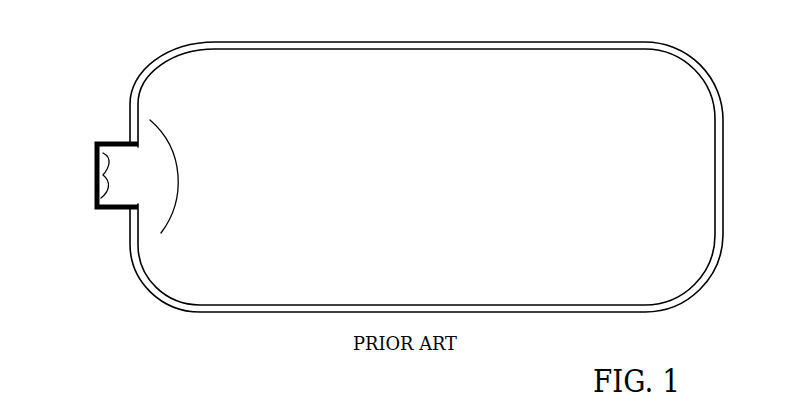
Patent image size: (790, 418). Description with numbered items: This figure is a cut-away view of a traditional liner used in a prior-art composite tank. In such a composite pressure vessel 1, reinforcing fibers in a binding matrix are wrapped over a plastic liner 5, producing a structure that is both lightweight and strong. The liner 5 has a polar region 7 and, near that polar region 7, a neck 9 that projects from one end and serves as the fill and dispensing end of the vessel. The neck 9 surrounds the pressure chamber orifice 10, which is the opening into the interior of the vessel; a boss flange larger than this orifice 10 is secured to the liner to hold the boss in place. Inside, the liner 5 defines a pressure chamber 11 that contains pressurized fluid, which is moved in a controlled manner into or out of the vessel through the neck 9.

The composite pressure vessel 1 is at (113, 85).
The plastic liner 5 is at (318, 47).
The polar region 7 is at (180, 171).
The neck 9 is at (108, 141).
The pressure chamber orifice 10 is at (118, 175).
The pressure chamber 11 is at (370, 208).